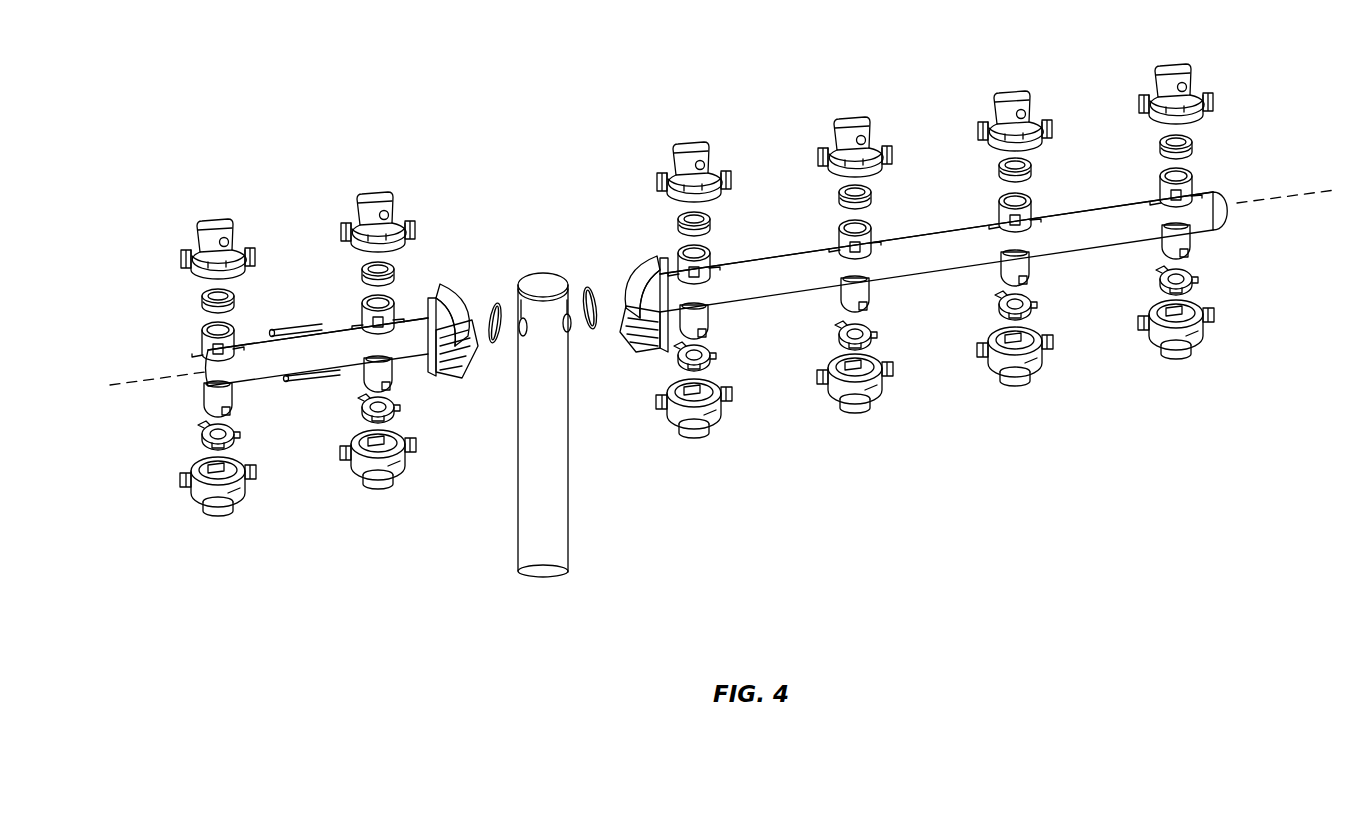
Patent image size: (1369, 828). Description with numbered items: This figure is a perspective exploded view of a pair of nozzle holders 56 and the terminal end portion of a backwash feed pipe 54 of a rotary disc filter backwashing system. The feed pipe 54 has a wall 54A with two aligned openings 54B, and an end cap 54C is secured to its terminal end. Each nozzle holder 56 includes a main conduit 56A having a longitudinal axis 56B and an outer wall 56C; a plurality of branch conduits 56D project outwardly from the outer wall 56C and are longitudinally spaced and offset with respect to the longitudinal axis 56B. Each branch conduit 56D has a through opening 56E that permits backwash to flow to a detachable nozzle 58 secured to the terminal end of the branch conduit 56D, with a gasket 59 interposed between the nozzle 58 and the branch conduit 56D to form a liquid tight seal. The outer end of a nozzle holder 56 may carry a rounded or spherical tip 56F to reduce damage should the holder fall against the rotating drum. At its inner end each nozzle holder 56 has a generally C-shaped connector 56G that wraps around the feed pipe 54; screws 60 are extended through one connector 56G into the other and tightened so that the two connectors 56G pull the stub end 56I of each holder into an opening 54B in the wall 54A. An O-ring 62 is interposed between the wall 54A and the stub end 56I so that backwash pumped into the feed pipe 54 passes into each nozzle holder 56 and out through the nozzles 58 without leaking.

The feed pipe 54 is at (547, 369).
The wall 54A is at (548, 502).
The opening 54B is at (568, 318).
The end cap 54C is at (542, 287).
The nozzle holder 56 is at (707, 356).
The main conduit 56A is at (707, 364).
The longitudinal axis 56B is at (1313, 157).
The outer wall 56C is at (257, 382).
The branch conduit 56D is at (385, 372).
The through opening 56E is at (388, 305).
The rounded or spherical tip 56F is at (1227, 213).
The connector 56G is at (546, 279).
The stub end 56I is at (467, 322).
The nozzle 58 is at (370, 210).
The gasket 59 is at (205, 300).
The screw 60 is at (303, 330).
The O-ring 62 is at (592, 288).